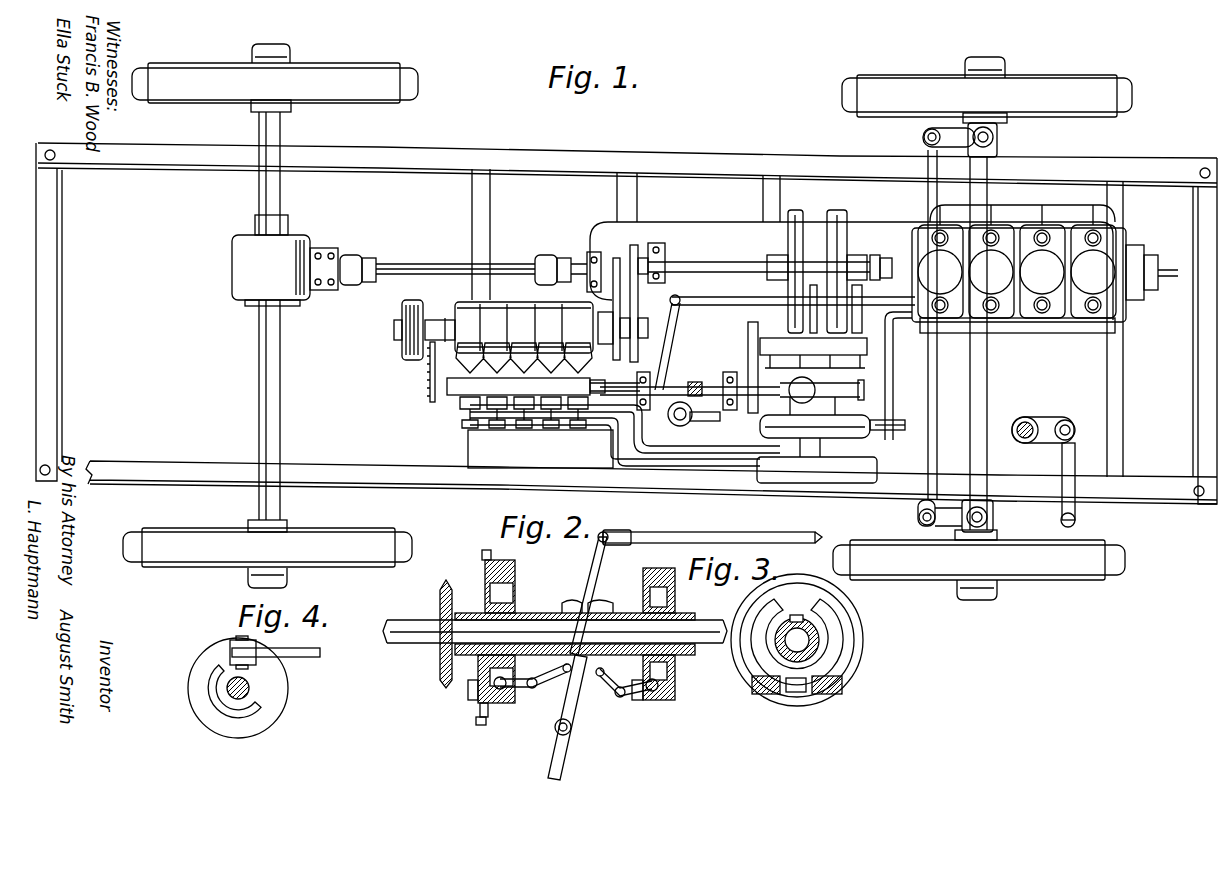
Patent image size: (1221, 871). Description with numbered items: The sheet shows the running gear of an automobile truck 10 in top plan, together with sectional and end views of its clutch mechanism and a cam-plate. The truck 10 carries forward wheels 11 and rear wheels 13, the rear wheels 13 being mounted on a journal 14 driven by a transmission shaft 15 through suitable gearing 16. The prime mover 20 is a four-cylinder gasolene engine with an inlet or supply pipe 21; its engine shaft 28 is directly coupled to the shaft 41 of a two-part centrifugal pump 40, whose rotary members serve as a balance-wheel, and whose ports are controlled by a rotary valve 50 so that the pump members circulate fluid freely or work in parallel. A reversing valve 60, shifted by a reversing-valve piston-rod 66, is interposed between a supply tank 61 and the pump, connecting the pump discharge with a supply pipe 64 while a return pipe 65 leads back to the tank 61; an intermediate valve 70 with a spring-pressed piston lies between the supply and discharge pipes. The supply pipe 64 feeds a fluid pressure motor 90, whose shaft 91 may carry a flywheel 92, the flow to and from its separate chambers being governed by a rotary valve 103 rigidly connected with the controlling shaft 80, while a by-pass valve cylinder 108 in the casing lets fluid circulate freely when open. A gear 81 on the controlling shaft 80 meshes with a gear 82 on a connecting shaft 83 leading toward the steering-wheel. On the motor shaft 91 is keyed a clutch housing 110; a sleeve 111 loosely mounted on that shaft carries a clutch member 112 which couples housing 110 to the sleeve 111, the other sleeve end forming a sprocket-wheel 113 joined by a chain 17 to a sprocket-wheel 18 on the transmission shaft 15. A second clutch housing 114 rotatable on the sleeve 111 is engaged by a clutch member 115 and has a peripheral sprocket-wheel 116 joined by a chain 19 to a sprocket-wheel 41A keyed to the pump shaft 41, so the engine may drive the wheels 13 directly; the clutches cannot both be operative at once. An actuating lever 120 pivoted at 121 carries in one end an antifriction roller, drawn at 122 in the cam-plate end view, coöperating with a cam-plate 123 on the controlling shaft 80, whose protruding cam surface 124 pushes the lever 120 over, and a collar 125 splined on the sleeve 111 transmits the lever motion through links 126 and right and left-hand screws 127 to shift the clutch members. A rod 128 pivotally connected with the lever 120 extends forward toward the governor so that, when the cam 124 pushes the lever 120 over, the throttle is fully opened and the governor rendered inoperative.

In FIG. 1, the truck 10 is at (758, 158).
In FIG. 1, the forward wheels 11 is at (887, 95).
In FIG. 1, the rear wheels 13 is at (372, 83).
In FIG. 1, the journal 14 is at (268, 362).
In FIG. 1, the transmission shaft 15 is at (408, 272).
In FIG. 1, the gearing 16 is at (250, 258).
In FIG. 1, the chain 17 is at (622, 310).
In FIG. 1, the sprocket-wheel 18 is at (610, 265).
In FIG. 1, the chain 19 is at (645, 295).
In FIG. 1, the prime mover 20 is at (1110, 245).
In FIG. 1, the inlet or supply pipe 21 is at (1035, 335).
In FIG. 1, the engine shaft 28 is at (888, 258).
In FIG. 1, the two-part centrifugal pump 40 is at (848, 222).
In FIG. 1, the pump shaft 41 is at (748, 266).
In FIG. 1, the sprocket-wheel 41A is at (636, 258).
In FIG. 1, the rotary valve 50 is at (848, 358).
In FIG. 1, the reversing valve 60 is at (845, 438).
In FIG. 1, the supply tank 61 is at (762, 483).
In FIG. 1, the supply pipe 64 is at (605, 418).
In FIG. 1, the return pipe 65 is at (575, 428).
In FIG. 1, the reversing-valve piston-rod 66 is at (905, 428).
In FIG. 1, the intermediate valve 70 is at (845, 397).
In FIG. 1, the controlling shaft 80 is at (706, 390).
In FIG. 4, the controlling shaft 80 is at (250, 688).
In FIG. 1, the gear 81 is at (697, 397).
In FIG. 1, the gear 82 is at (672, 420).
In FIG. 1, the connecting shaft 83 is at (712, 420).
In FIG. 1, the fluid pressure motor 90 is at (462, 305).
In FIG. 2, the motor shaft 91 is at (405, 628).
In FIG. 3, the motor shaft 91 is at (805, 655).
In FIG. 1, the flywheel 92 is at (405, 350).
In FIG. 1, the rotary valve 103 is at (598, 388).
In FIG. 1, the by-pass valve cylinder 108 is at (428, 380).
In FIG. 2, the clutch housing 110 is at (680, 695).
In FIG. 3, the clutch housing 110 is at (835, 590).
In FIG. 2, the sleeve 111 is at (540, 618).
In FIG. 3, the sleeve 111 is at (812, 638).
In FIG. 2, the clutch member 112 is at (645, 588).
In FIG. 3, the clutch member 112 is at (748, 665).
In FIG. 1, the sprocket-wheel 113 is at (612, 330).
In FIG. 2, the sprocket-wheel 113 is at (442, 592).
In FIG. 2, the clutch housing 114 is at (512, 583).
In FIG. 2, the clutch member 115 is at (530, 593).
In FIG. 1, the sprocket-wheel 116 is at (625, 350).
In FIG. 2, the sprocket-wheel 116 is at (478, 712).
In FIG. 2, the actuating lever 120 is at (596, 570).
In FIG. 4, the actuating lever 120 is at (315, 650).
In FIG. 2, the pivot 121 is at (560, 730).
In FIG. 4, the bracket 122 is at (240, 648).
In FIG. 4, the cam-plate 123 is at (280, 698).
In FIG. 4, the cam surface 124 is at (235, 730).
In FIG. 2, the collar 125 is at (604, 612).
In FIG. 2, the links 126 is at (535, 698).
In FIG. 3, the links 126 is at (790, 695).
In FIG. 2, the right and left-hand screws 127 is at (470, 690).
In FIG. 3, the right and left-hand screws 127 is at (825, 700).
In FIG. 2, the rod 128 is at (775, 536).